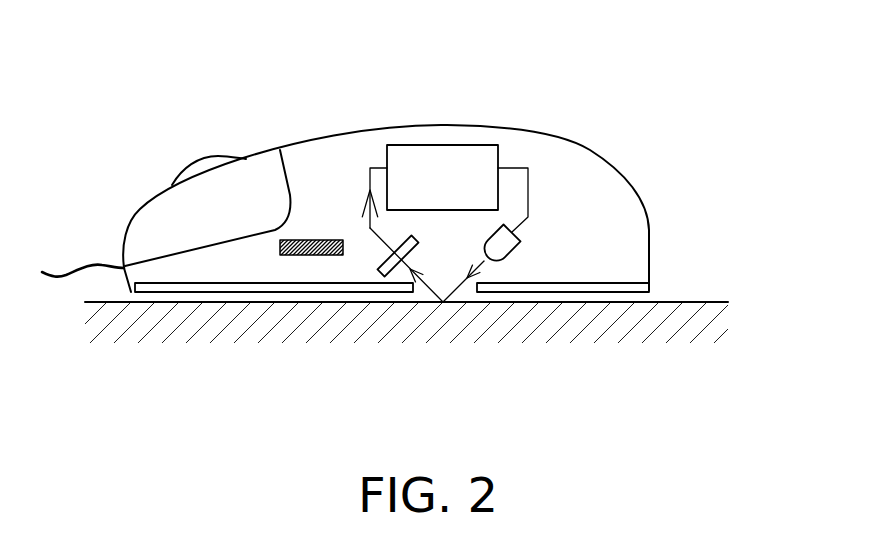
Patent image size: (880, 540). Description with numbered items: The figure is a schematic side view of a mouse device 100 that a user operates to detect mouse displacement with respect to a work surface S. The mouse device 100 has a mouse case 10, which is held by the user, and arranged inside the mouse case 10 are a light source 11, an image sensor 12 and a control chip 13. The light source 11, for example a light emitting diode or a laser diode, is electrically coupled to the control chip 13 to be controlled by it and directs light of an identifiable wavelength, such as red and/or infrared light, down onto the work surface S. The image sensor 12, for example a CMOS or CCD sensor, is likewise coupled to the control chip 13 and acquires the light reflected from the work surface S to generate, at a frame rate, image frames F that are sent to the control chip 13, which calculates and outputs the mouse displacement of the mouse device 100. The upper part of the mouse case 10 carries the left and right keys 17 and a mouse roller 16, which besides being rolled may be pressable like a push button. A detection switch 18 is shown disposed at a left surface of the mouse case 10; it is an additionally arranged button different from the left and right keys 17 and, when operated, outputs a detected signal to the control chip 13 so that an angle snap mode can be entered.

The mouse device 100 is at (58, 35).
The mouse case 10 is at (603, 156).
The light source 11 is at (517, 238).
The image sensor 12 is at (395, 270).
The control chip 13 is at (450, 145).
The mouse roller 16 is at (205, 156).
The left and right keys 17 is at (163, 208).
The detection switch 18 is at (296, 256).
The work surface S is at (695, 302).
The image frames F is at (393, 238).